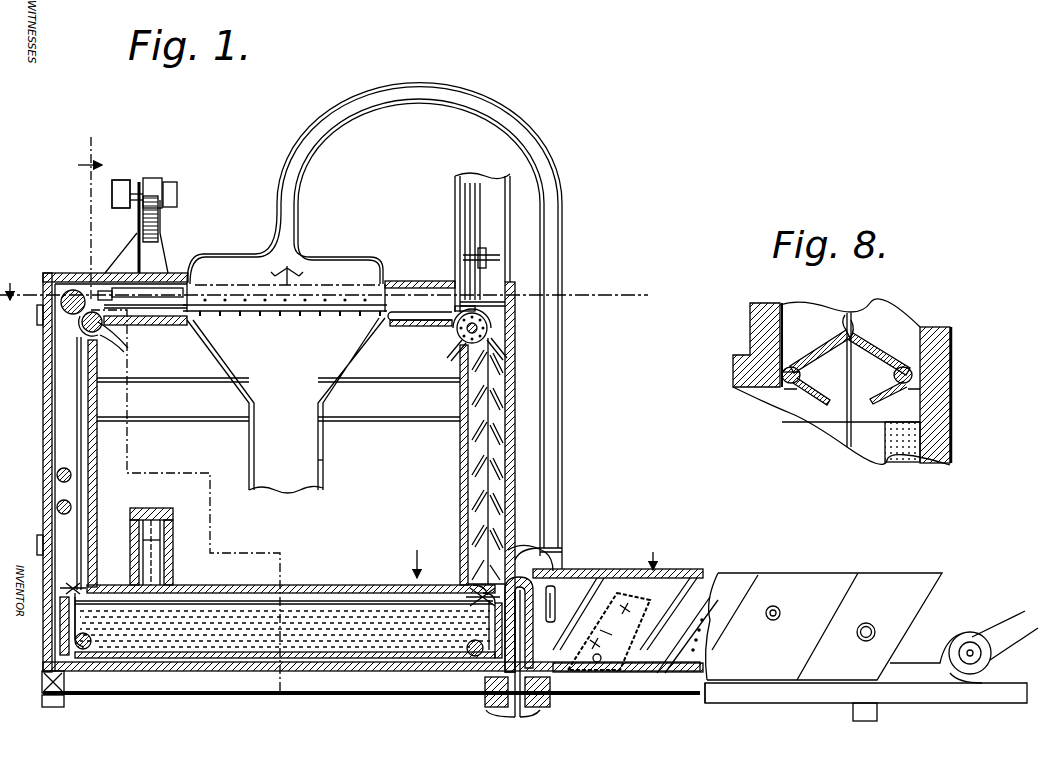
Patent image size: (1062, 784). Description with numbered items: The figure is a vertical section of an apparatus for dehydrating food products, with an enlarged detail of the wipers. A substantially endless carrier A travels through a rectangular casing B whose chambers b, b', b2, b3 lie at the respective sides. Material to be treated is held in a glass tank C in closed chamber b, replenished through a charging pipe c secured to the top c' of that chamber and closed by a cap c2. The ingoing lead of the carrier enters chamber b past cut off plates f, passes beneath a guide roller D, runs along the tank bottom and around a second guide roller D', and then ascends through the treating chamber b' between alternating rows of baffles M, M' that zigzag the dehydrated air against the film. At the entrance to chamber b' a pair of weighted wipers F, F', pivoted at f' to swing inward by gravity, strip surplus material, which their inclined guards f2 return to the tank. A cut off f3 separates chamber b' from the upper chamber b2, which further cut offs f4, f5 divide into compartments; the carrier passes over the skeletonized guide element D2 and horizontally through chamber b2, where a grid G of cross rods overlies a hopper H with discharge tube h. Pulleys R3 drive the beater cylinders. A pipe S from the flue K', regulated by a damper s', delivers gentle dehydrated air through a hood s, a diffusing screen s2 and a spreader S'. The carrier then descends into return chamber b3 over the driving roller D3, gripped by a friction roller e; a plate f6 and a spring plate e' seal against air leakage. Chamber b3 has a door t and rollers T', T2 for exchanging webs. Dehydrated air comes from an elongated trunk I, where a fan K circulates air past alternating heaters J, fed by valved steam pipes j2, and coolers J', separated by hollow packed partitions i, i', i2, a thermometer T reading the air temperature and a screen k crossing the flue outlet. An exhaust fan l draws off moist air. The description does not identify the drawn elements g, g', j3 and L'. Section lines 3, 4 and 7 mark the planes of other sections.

In FIG. 1, the endless carrier A is at (55, 522).
In FIG. 8, the endless carrier A is at (851, 440).
In FIG. 1, the casing B is at (97, 488).
In FIG. 8, the casing B is at (757, 337).
In FIG. 1, the tank C is at (208, 660).
In FIG. 8, the tank C is at (905, 442).
In FIG. 1, the guide roller D is at (92, 677).
In FIG. 1, the guide roller D' is at (435, 680).
In FIG. 1, the guide element D2 is at (458, 335).
In FIG. 1, the driving roller D3 is at (108, 327).
In FIG. 1, the friction roller e is at (43, 313).
In FIG. 1, the spring plate e' is at (87, 298).
In FIG. 1, the cut off plates f is at (64, 591).
In FIG. 1, the guards f2 is at (512, 705).
In FIG. 8, the guards f2 is at (980, 426).
In FIG. 1, the cut off f3 is at (452, 306).
In FIG. 1, the cut off f4 is at (392, 305).
In FIG. 1, the cut off f5 is at (193, 296).
In FIG. 1, the plate f6 is at (104, 290).
In FIG. 1, the wiper F is at (464, 583).
In FIG. 8, the wiper F is at (817, 330).
In FIG. 1, the wiper F' is at (575, 521).
In FIG. 8, the wiper F' is at (887, 327).
In FIG. 8, the pivot f' is at (854, 399).
In FIG. 1, the rails g is at (278, 375).
In FIG. 1, the guide g' is at (145, 333).
In FIG. 1, the grid G is at (284, 316).
In FIG. 1, the tube h is at (323, 462).
In FIG. 1, the hopper H is at (245, 380).
In FIG. 1, the partition i is at (723, 678).
In FIG. 1, the partition i' is at (727, 609).
In FIG. 1, the partition i2 is at (640, 570).
In FIG. 1, the casing or trunk I is at (779, 580).
In FIG. 1, the valved pipes j2 is at (870, 623).
In FIG. 1, the chain / hole j3 is at (598, 654).
In FIG. 1, the heater J is at (866, 673).
In FIG. 1, the cooler J' is at (635, 600).
In FIG. 1, the screen k is at (465, 560).
In FIG. 1, the fan K is at (571, 427).
In FIG. 1, the flue K' is at (556, 517).
In FIG. 1, the exhaust fan l is at (490, 258).
In FIG. 1, the gauge tube L' is at (533, 227).
In FIG. 1, the baffles M is at (543, 477).
In FIG. 1, the baffles M' is at (450, 465).
In FIG. 1, the pulleys R3 is at (125, 180).
In FIG. 1, the hood s is at (309, 258).
In FIG. 1, the valve or damper s' is at (572, 533).
In FIG. 1, the screen s2 is at (245, 292).
In FIG. 1, the pipe S is at (438, 315).
In FIG. 1, the spreader S' is at (286, 262).
In FIG. 1, the door t is at (50, 425).
In FIG. 1, the thermometer T is at (618, 542).
In FIG. 1, the roller T' is at (36, 462).
In FIG. 1, the roller T2 is at (58, 503).
In FIG. 1, the chamber b is at (284, 573).
In FIG. 1, the treating chamber b' is at (435, 465).
In FIG. 1, the upper chamber b2 is at (372, 282).
In FIG. 1, the return chamber b3 is at (62, 385).
In FIG. 1, the charging pipe c is at (157, 545).
In FIG. 1, the top of chamber c' is at (291, 573).
In FIG. 1, the cap c2 is at (150, 508).
In FIG. 1, the section line 3— 3 is at (331, 296).
In FIG. 1, the section line 4— 4 is at (185, 417).
In FIG. 1, the section line 7— 7 is at (502, 567).